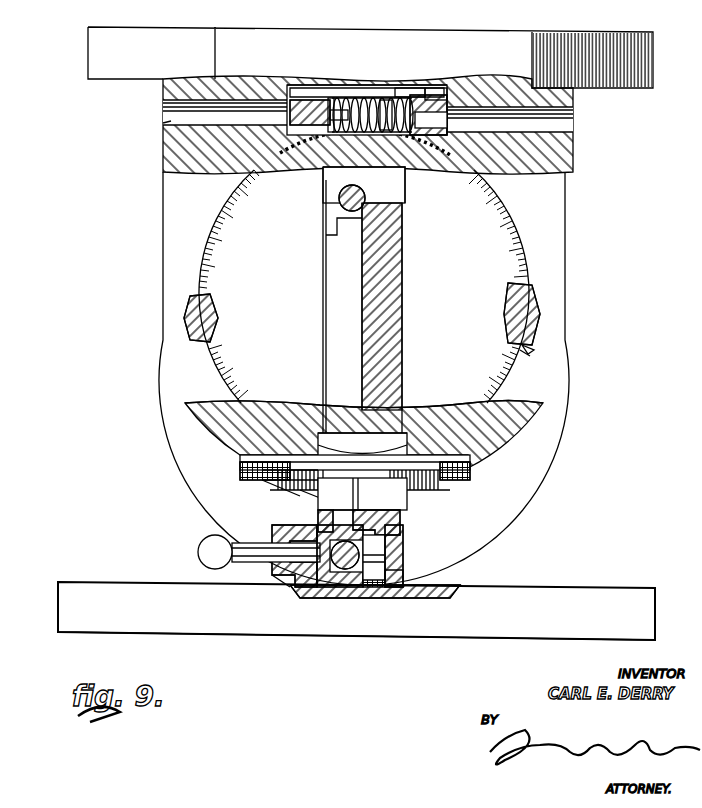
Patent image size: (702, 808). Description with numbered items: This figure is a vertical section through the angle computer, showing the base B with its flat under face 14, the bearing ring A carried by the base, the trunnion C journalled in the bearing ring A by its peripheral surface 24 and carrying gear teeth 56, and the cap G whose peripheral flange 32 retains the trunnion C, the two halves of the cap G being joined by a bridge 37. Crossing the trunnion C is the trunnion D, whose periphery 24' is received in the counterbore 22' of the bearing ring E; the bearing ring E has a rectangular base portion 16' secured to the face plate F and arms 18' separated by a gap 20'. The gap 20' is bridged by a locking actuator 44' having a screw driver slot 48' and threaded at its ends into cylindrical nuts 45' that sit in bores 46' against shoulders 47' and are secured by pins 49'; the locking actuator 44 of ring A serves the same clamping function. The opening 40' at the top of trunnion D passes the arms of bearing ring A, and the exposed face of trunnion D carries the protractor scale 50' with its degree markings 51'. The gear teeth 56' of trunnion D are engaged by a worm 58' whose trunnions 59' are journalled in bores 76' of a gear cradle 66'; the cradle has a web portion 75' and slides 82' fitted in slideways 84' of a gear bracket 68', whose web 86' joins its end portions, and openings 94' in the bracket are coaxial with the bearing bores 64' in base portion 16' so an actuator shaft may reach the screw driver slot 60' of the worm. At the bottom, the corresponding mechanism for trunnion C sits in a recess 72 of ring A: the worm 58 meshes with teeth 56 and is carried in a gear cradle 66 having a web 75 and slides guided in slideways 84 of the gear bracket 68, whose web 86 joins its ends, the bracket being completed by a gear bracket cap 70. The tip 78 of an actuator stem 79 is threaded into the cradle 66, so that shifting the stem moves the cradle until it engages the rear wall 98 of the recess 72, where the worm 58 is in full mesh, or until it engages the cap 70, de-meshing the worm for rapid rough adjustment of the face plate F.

The gear bracket 68' is at (367, 47).
The bracket web 86' is at (372, 71).
The cradle web portion 75' is at (408, 53).
The worm trunnions 59' is at (438, 55).
The slides 82' is at (367, 89).
The gear cradle 66' is at (344, 87).
The worm 58' is at (381, 86).
The screw driver slot 60' is at (424, 89).
The slideways 84' is at (439, 85).
The bearing bores 64' is at (363, 119).
The cradle bores 76' is at (299, 114).
The bracket openings 94' is at (510, 126).
The rectangular base portion 16' is at (347, 132).
The gear teeth 56' is at (393, 237).
The opening 40' is at (311, 190).
The peripheral surface 24 is at (364, 185).
The locking actuator 44 is at (328, 202).
The peripheral flange 32 is at (332, 232).
The scale markings 51' is at (372, 286).
The protractor scale 50' is at (381, 284).
The counterbore 22' is at (558, 337).
The periphery 24' is at (555, 351).
The arms 18' is at (367, 434).
The bores 46' is at (362, 451).
The cylindrical nuts 45' is at (334, 484).
The pins 49' is at (363, 478).
The screw driver slots 48' is at (356, 487).
The shoulders 47' is at (291, 496).
The gap 20' is at (312, 516).
The actuator stem tip 78 is at (306, 546).
The bridge 37 is at (362, 494).
The locking actuator 44' is at (373, 494).
The gear teeth 56 is at (392, 522).
The rear wall 98 is at (404, 556).
The slideways 84 is at (410, 575).
The actuator stem 79 is at (198, 553).
The gear bracket cap 70 is at (282, 587).
The gear cradle 66 is at (281, 598).
The bracket web 86 is at (331, 573).
The worm 58 is at (344, 581).
The cradle web portion 75 is at (371, 578).
The recess 72 is at (388, 588).
The gear bracket 68 is at (375, 603).
The flat under face 14 is at (200, 634).
The bearing ring A is at (404, 202).
The base B is at (50, 609).
The trunnion C is at (410, 322).
The trunnion D is at (308, 404).
The bearing ring E is at (572, 224).
The face plate F is at (82, 62).
The cap G is at (320, 300).